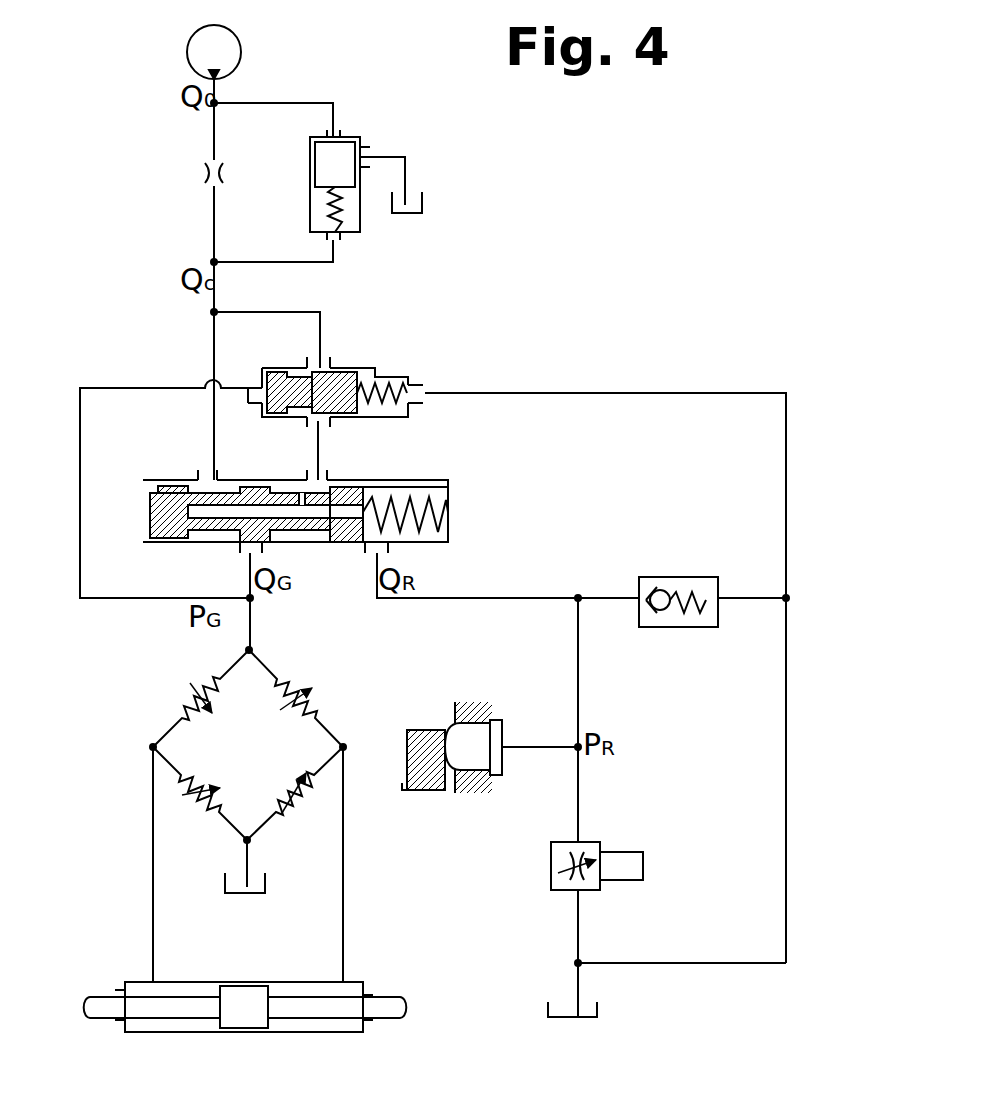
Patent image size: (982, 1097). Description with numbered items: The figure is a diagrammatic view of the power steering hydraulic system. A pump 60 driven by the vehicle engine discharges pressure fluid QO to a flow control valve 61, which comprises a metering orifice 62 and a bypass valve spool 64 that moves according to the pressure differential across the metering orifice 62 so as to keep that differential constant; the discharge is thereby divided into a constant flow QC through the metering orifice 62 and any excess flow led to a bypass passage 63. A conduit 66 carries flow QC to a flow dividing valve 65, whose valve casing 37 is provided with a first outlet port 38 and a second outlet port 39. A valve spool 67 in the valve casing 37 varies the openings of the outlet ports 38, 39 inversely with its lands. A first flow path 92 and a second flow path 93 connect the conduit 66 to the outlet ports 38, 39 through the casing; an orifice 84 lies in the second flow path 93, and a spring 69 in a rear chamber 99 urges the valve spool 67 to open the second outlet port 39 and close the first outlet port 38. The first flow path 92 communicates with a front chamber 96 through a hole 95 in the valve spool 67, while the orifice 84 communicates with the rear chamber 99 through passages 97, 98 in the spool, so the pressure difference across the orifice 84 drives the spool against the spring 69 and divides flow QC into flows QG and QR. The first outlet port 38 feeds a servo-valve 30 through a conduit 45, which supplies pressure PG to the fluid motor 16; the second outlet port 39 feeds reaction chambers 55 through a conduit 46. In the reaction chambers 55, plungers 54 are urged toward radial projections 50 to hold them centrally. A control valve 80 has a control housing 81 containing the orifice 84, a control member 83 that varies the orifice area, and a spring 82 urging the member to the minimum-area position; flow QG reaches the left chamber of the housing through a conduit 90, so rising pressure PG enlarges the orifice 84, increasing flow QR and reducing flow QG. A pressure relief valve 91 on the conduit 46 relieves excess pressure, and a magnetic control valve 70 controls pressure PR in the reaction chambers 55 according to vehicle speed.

The fluid motor 16 is at (303, 1032).
The servo-valve 30 is at (177, 696).
The valve casing 37 is at (450, 498).
The first outlet port 38 is at (245, 553).
The second outlet port 39 is at (382, 553).
The conduit 45 is at (250, 622).
The conduit 46 is at (527, 600).
The radial projection 50 is at (423, 737).
The plunger 54 is at (472, 755).
The reaction chamber 55 is at (498, 712).
The pump 60 is at (243, 53).
The flow control valve 61 is at (310, 182).
The metering orifice 62 is at (203, 172).
The bypass passage 63 is at (407, 173).
The bypass valve spool 64 is at (343, 155).
The flow dividing valve 65 is at (459, 479).
The conduit 66 is at (212, 302).
The valve spool 67 is at (342, 527).
The spring 69 is at (430, 527).
The magnetic control valve 70 is at (600, 842).
The control valve 80 is at (342, 350).
The control housing 81 is at (365, 368).
The spring 82 is at (400, 377).
The control member 83 is at (345, 405).
The orifice 84 is at (300, 372).
The conduit 90 is at (80, 427).
The pressure relief valve 91 is at (682, 577).
The first flow path 92 is at (212, 350).
The second flow path 93 is at (288, 312).
The hole 95 is at (167, 487).
The front chamber 96 is at (148, 492).
The passage 97 is at (302, 502).
The passage 98 is at (253, 512).
The rear chamber 99 is at (427, 492).